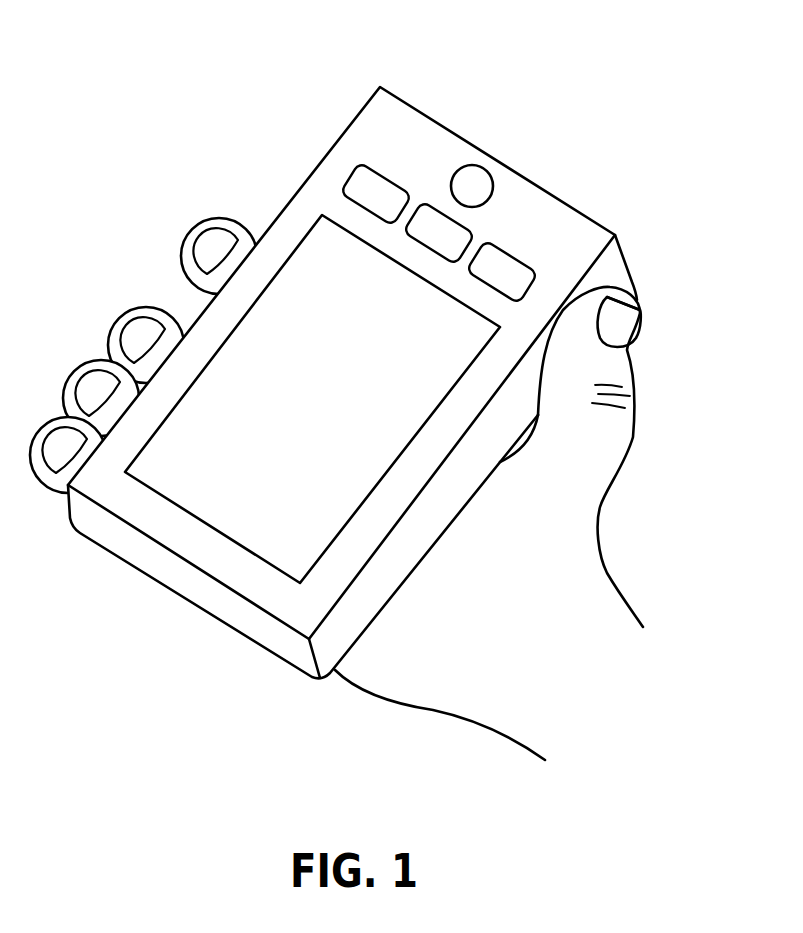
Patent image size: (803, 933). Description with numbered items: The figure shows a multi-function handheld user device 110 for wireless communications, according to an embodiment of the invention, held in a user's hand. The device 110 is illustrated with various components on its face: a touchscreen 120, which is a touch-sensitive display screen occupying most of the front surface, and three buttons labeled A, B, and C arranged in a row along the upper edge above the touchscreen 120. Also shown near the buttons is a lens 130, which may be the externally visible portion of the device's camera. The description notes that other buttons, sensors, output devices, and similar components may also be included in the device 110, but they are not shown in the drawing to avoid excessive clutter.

The multi-function handheld user device 110 is at (372, 132).
The touchscreen 120 is at (227, 462).
The lens 130 is at (495, 182).